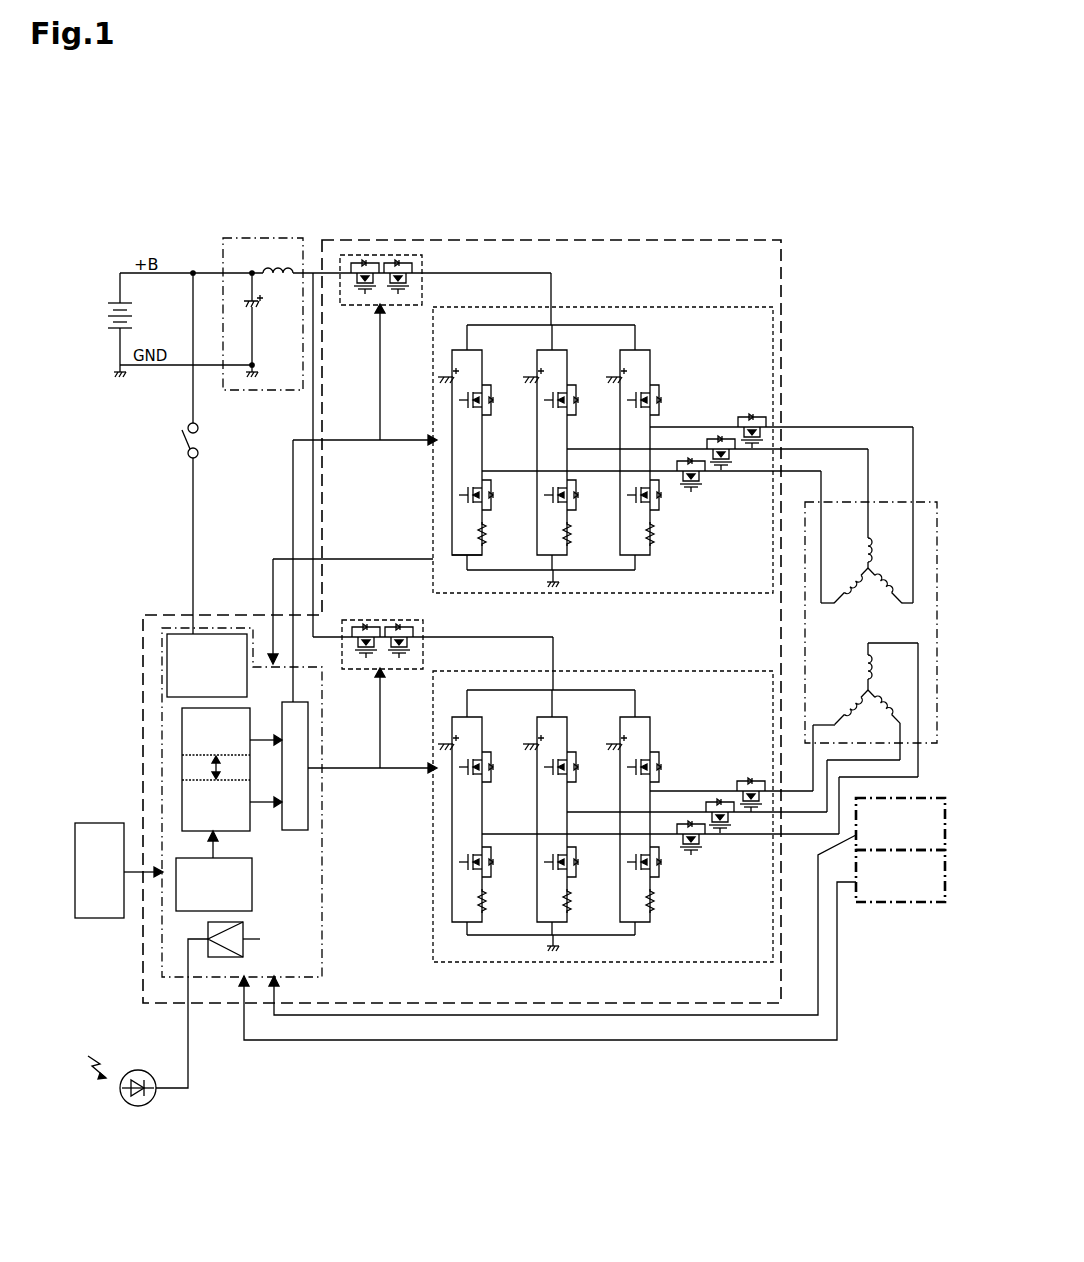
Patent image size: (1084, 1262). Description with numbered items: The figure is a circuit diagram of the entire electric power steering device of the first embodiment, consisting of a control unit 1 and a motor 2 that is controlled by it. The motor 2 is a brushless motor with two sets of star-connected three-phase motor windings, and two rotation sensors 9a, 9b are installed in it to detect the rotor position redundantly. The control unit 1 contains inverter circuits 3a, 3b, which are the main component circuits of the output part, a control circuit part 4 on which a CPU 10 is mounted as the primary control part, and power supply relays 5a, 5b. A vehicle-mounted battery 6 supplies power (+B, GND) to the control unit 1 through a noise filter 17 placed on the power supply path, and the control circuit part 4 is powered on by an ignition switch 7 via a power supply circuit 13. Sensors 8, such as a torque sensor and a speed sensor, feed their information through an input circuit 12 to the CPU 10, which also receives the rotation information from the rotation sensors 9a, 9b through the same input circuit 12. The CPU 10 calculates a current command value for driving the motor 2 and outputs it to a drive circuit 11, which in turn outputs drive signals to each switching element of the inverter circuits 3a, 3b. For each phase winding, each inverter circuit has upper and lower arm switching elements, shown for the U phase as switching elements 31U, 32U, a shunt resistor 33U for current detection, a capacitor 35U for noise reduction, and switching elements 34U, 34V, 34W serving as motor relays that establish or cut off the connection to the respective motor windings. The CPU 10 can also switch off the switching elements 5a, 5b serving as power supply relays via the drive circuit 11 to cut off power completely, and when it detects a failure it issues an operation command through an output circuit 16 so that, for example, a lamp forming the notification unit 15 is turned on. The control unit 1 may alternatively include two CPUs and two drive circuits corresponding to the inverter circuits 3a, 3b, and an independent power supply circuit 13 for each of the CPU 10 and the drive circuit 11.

The control unit 1 is at (626, 240).
The motor 2 is at (893, 500).
The inverter circuit 3a is at (728, 306).
The inverter circuit 3b is at (622, 963).
The control circuit part 4 is at (162, 667).
The power supply relay 5a is at (382, 256).
The power supply relay 5b is at (400, 620).
The battery 6 is at (113, 298).
The ignition switch 7 is at (172, 448).
The sensors 8 is at (97, 920).
The rotation sensor 9a is at (852, 848).
The rotation sensor 9b is at (878, 903).
The CPU 10 is at (182, 770).
The drive circuit 11 is at (292, 832).
The input circuit 12 is at (186, 912).
The power supply circuit 13 is at (175, 634).
The notification unit 15 is at (130, 1105).
The output circuit 16 is at (218, 958).
The noise filter 17 is at (282, 240).
The switching element 31U is at (487, 400).
The switching element 32U is at (493, 505).
The shunt resistor 33U is at (487, 548).
The switching element serving as motor relay 34U is at (690, 492).
The switching element serving as motor relay 34V is at (717, 427).
The switching element serving as motor relay 34W is at (748, 455).
The capacitor 35U is at (445, 375).